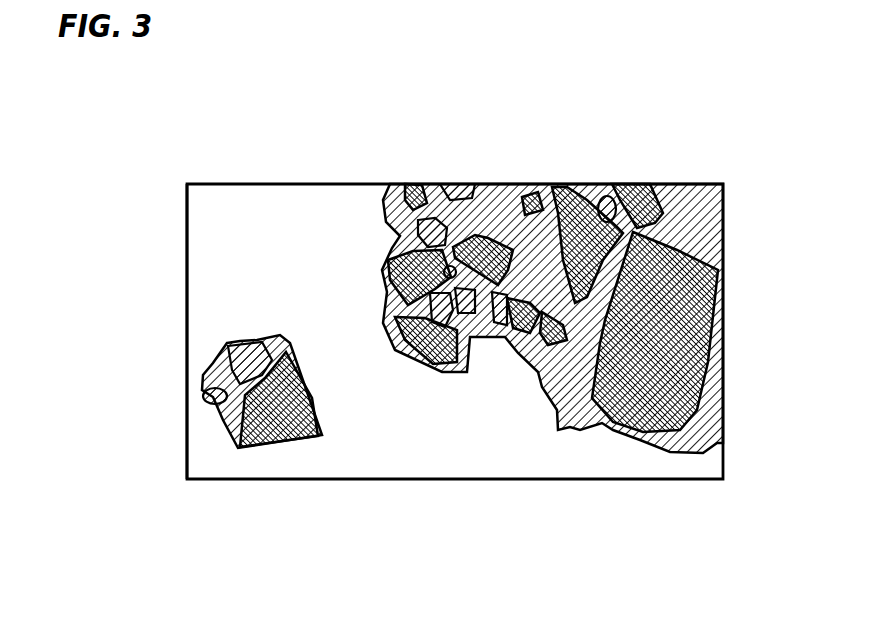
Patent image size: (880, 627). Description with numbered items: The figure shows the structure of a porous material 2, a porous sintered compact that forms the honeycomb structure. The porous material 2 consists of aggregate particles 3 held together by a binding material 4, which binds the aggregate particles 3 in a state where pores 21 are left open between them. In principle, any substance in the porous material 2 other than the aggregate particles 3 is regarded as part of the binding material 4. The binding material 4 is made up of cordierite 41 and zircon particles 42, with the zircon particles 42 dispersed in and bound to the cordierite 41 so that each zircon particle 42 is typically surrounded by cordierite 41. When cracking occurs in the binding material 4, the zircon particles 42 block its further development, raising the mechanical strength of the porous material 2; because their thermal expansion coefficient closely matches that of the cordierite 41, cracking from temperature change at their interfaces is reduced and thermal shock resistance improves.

The porous material 2 is at (288, 152).
The pores 21 is at (247, 286).
The aggregate particles 3 is at (405, 283).
The binding material 4 is at (437, 361).
The cordierite 41 is at (246, 390).
The zircon particles 42 is at (435, 225).